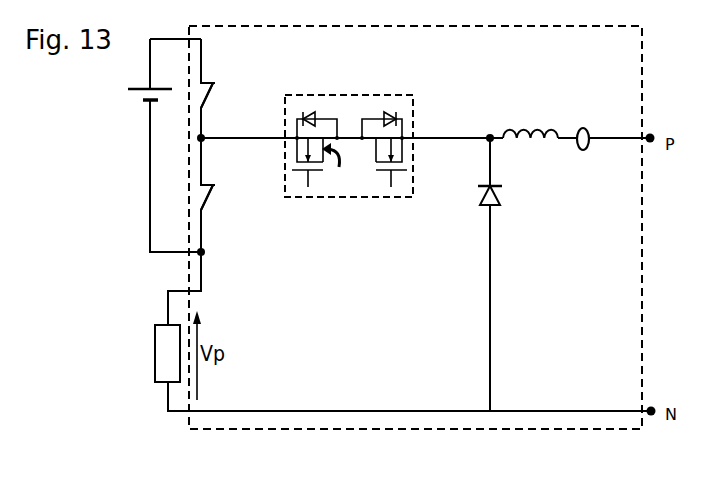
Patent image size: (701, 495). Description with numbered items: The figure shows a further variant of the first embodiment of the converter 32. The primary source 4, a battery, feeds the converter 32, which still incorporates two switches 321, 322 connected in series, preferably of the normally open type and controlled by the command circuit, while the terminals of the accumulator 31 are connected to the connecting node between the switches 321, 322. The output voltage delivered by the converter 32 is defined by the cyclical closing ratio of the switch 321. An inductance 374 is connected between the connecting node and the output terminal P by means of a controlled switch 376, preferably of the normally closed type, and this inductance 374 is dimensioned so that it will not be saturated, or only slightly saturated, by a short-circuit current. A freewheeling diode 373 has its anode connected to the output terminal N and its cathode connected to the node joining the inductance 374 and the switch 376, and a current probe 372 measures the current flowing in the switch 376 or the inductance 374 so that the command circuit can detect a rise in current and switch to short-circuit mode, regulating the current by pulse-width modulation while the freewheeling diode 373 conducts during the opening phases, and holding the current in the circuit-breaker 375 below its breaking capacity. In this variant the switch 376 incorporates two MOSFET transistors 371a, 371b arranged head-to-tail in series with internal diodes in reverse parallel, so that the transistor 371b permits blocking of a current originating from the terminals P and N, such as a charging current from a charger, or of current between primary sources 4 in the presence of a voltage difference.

The primary source 4 is at (155, 353).
The accumulator 31 is at (158, 101).
The converter 32 is at (413, 431).
The switch 321 is at (211, 81).
The switch 322 is at (211, 184).
The transistor 371a is at (317, 184).
The transistor 371b is at (399, 184).
The current probe 372 is at (583, 127).
The freewheeling diode 373 is at (501, 193).
The inductance 374 is at (550, 128).
The circuit-breaker 375 is at (350, 92).
The controlled switch 376 is at (343, 167).